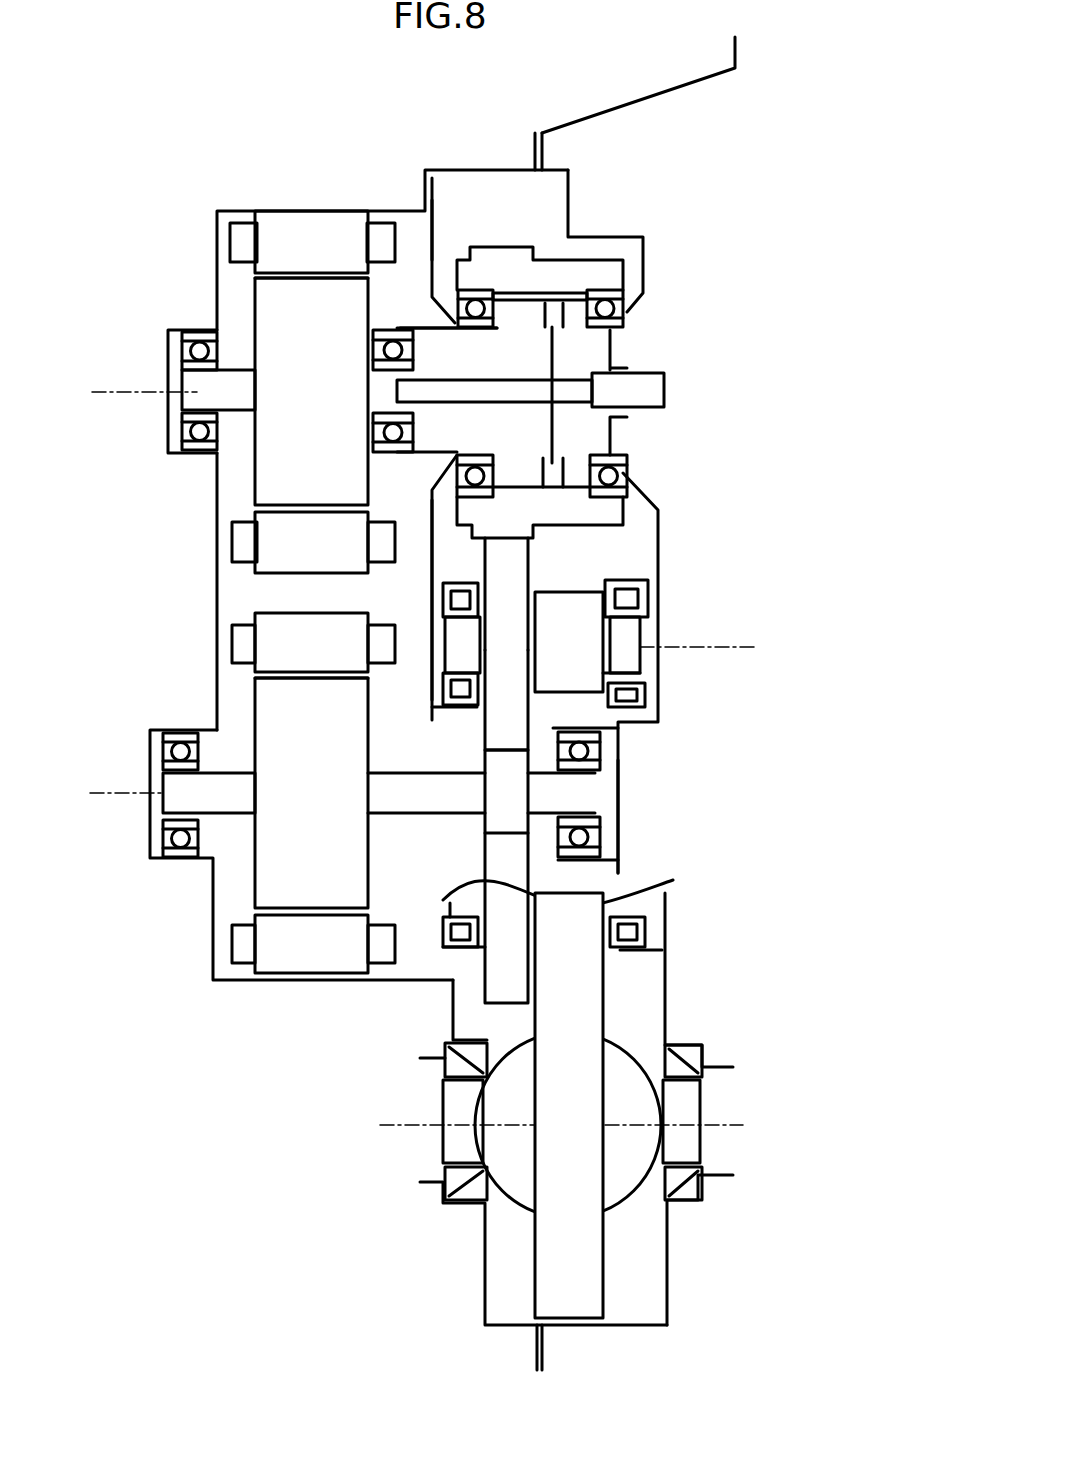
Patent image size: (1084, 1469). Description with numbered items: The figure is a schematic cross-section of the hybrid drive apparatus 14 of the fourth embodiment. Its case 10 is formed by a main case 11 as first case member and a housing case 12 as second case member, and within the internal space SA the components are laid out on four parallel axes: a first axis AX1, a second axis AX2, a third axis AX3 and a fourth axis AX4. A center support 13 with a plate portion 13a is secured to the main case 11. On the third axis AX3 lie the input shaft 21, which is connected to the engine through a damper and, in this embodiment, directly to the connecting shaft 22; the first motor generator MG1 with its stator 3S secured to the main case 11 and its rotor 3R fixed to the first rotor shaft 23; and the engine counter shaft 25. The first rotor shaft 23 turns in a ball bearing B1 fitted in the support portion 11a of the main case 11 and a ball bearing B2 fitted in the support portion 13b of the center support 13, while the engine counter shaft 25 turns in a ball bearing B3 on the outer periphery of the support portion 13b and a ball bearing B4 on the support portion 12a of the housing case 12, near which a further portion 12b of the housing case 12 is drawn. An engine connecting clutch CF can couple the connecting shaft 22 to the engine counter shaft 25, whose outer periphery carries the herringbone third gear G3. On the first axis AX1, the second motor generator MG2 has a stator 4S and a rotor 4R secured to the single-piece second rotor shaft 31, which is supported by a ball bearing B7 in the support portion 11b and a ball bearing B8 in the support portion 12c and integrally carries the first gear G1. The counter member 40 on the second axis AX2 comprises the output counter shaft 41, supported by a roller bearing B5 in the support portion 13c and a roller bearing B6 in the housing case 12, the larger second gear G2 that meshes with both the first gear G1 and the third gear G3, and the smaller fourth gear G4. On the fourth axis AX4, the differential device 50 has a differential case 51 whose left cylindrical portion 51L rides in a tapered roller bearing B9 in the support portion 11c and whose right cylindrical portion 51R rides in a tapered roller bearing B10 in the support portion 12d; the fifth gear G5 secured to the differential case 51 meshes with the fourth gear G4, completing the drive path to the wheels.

The hybrid drive apparatus 14 is at (343, 105).
The case 10 is at (528, 91).
The main case 11 is at (434, 162).
The housing case 12 is at (556, 116).
The center support 13 is at (420, 228).
The plate portion 13a is at (437, 240).
The support portion 13b is at (432, 325).
The support portion 13c is at (440, 567).
The engine connecting clutch CF is at (567, 282).
The ball bearing B3 is at (490, 288).
The ball bearing B4 is at (625, 288).
The first motor generator MG1 is at (165, 208).
The stator 3S is at (272, 247).
The rotor 3R is at (272, 300).
The support portion 11a is at (187, 330).
The ball bearing B1 is at (190, 365).
The third axis AX3 is at (118, 394).
The first rotor shaft 23 is at (195, 400).
The internal space SA is at (230, 485).
The ball bearing B2 is at (395, 447).
The connecting shaft 22 is at (458, 386).
The input shaft 21 is at (662, 392).
The support portion 12a is at (622, 456).
The engine counter shaft 25 is at (617, 510).
The third gear G3 is at (545, 532).
The fourth gear G4 is at (590, 600).
The support portion 12b is at (640, 585).
The counter member 40 is at (670, 606).
The second axis AX2 is at (723, 648).
The output counter shaft 41 is at (632, 665).
The roller bearing B5 is at (455, 705).
The roller bearing B6 is at (640, 702).
The second motor generator MG2 is at (165, 615).
The stator 4S is at (273, 652).
The rotor 4R is at (273, 705).
The ball bearing B7 is at (165, 848).
The second rotor shaft 31 is at (167, 797).
The first axis AX1 is at (101, 794).
The support portion 11b is at (187, 860).
The first gear G1 is at (485, 822).
The second gear G2 is at (497, 738).
The ball bearing B8 is at (597, 822).
The support portion 12c is at (618, 873).
The fifth gear G5 is at (600, 965).
The differential device 50 is at (640, 1030).
The differential case 51 is at (517, 1175).
The left cylindrical portion 51L is at (450, 1160).
The right cylindrical portion 51R is at (683, 1148).
The tapered roller bearing B9 is at (455, 1063).
The tapered roller bearing B10 is at (705, 1047).
The fourth axis AX4 is at (588, 1126).
The support portion 11c is at (473, 1040).
The support portion 12d is at (690, 1200).